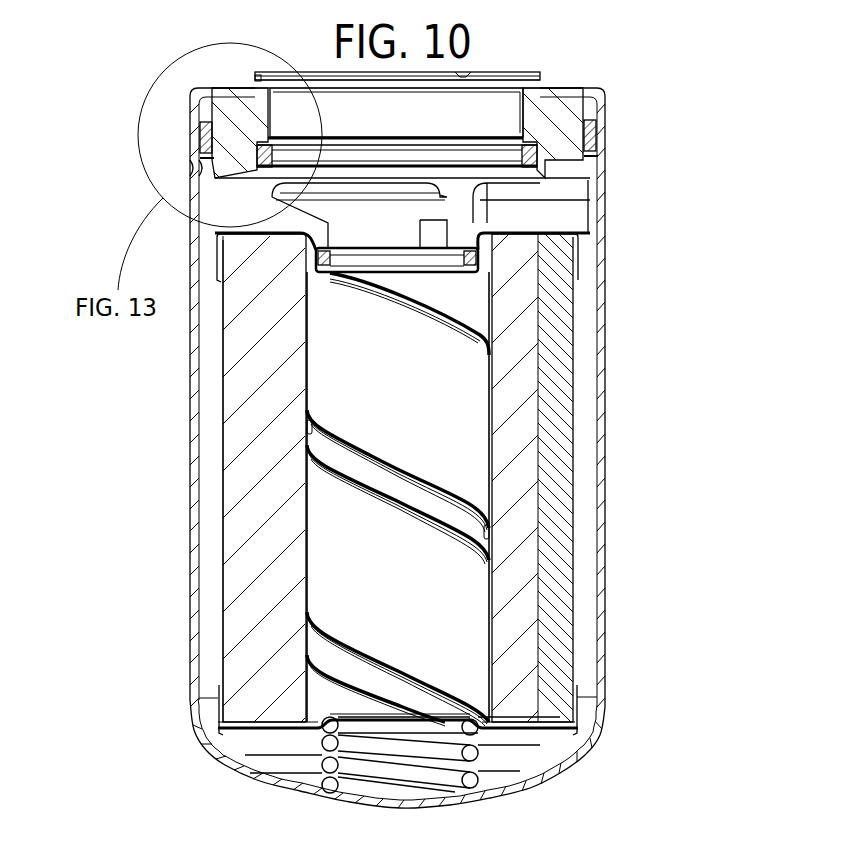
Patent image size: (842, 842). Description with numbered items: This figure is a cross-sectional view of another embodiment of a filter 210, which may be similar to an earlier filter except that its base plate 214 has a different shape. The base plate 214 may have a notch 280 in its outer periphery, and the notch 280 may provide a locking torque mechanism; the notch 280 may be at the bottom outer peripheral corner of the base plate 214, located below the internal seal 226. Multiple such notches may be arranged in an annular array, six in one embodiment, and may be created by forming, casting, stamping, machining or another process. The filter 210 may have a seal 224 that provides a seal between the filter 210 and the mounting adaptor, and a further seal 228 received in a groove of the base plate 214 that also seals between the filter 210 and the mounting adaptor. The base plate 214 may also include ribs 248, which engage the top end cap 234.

The filter 210 is at (626, 367).
The base plate 214 is at (585, 95).
The seal 224 is at (493, 263).
The internal seal 226 is at (200, 140).
The seal 228 is at (310, 180).
The top end cap 234 is at (527, 233).
The ribs 248 is at (445, 208).
The notch 280 is at (198, 168).